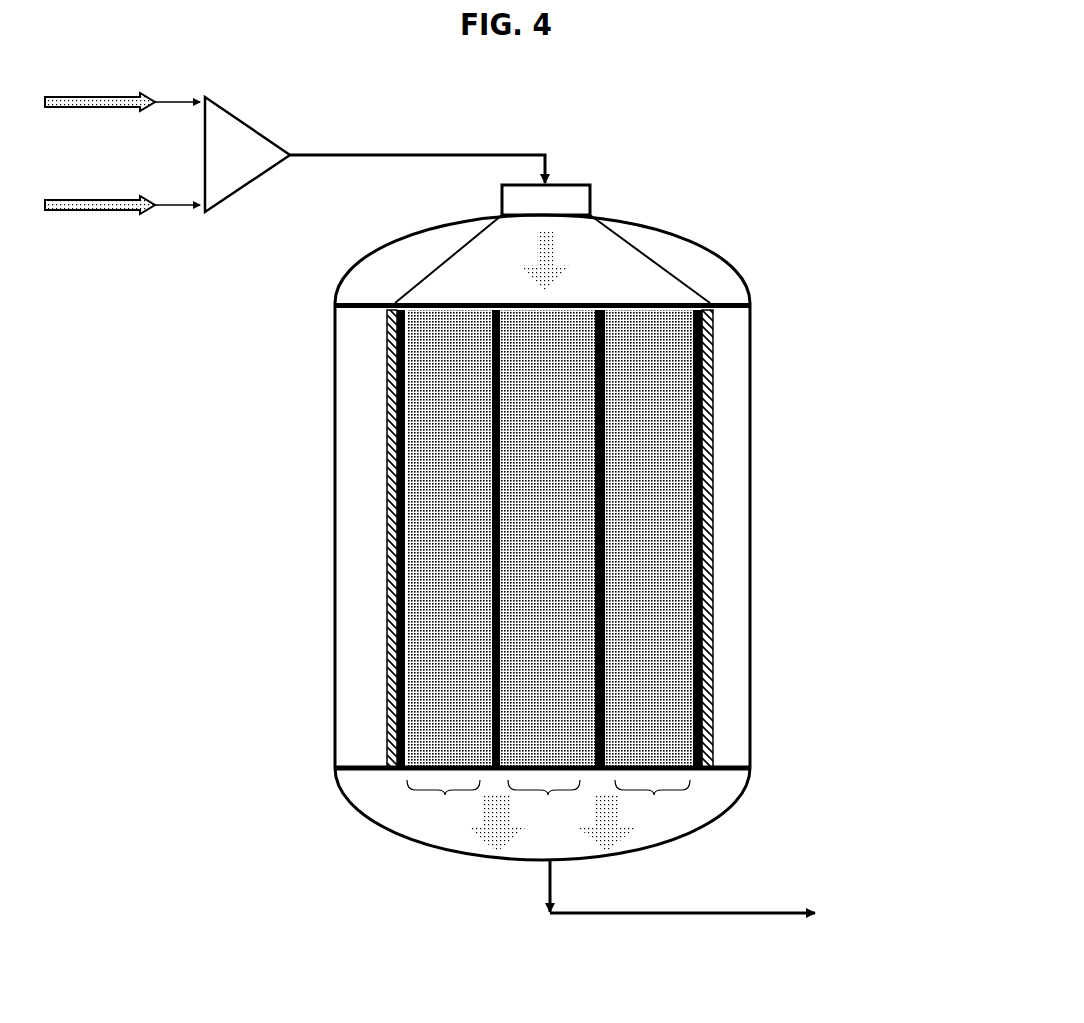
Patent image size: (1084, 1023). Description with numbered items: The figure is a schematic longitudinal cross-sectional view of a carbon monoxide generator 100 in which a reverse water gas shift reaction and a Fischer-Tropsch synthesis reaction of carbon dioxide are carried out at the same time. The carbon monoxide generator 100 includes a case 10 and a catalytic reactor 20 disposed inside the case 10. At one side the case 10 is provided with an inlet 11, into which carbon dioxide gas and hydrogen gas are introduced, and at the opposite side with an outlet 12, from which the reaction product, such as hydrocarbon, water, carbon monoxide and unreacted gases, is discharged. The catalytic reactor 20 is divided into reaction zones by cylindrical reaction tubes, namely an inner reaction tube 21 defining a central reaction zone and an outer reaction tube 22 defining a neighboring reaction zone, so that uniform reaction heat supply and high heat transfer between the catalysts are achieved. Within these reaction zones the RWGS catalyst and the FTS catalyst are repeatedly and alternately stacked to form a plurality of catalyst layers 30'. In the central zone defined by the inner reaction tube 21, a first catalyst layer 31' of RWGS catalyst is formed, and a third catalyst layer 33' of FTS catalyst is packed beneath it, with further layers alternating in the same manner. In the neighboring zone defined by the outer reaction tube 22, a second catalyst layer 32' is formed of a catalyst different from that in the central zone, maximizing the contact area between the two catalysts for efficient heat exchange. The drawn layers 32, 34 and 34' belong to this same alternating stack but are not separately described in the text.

The carbon monoxide generator 100 is at (763, 140).
The case 10 is at (745, 277).
The inlet 11 is at (590, 182).
The outlet 12 is at (545, 867).
The catalytic reactor 20 is at (722, 327).
The inner reaction tube 21 is at (390, 707).
The outer reaction tube 22 is at (390, 644).
The catalyst layers 30' is at (554, 528).
The first catalyst layer 31' is at (341, 361).
The outer insulating layer 32 is at (333, 340).
The second catalyst layer 32' is at (768, 345).
The third catalyst layer 33' is at (440, 539).
The catalyst layer 34 is at (378, 539).
The catalyst layer 34' is at (724, 539).